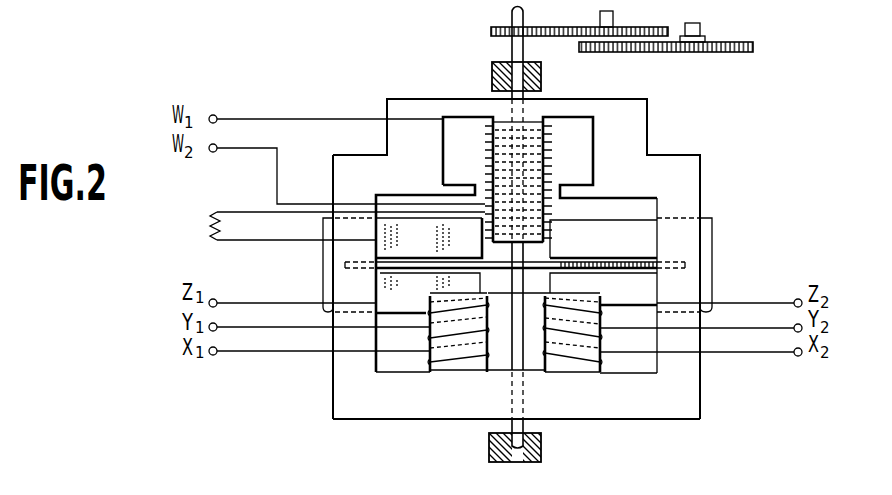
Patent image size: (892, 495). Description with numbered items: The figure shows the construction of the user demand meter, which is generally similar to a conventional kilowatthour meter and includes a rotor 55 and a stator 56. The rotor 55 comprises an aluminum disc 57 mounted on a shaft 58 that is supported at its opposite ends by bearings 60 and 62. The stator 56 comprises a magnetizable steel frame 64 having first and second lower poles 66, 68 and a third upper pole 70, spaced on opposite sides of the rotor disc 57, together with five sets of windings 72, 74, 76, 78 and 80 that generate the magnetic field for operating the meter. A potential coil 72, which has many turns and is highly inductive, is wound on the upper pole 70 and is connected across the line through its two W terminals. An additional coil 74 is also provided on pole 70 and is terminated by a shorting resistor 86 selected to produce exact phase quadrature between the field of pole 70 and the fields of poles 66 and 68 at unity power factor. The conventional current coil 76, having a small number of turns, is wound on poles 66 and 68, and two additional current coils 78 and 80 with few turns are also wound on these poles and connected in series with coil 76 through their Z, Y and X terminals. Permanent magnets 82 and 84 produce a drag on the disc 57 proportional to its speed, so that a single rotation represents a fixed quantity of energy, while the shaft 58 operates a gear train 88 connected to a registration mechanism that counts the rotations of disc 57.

The rotor 55 is at (535, 256).
The stator 56 is at (331, 378).
The aluminum disc 57 is at (490, 272).
The shaft 58 is at (511, 52).
The bearing 60 is at (488, 447).
The bearing 62 is at (491, 73).
The magnetizable steel frame 64 is at (332, 420).
The first lower pole 66 is at (426, 342).
The second lower pole 68 is at (611, 335).
The third upper pole 70 is at (548, 212).
The potential coil 72 is at (546, 148).
The additional coil 74 is at (490, 229).
The current coil 76 is at (305, 302).
The additional current coil 78 is at (292, 327).
The additional current coil 80 is at (278, 351).
The permanent magnet 82 is at (320, 265).
The permanent magnet 84 is at (700, 265).
The shorting resistor 86 is at (208, 228).
The gear train 88 is at (655, 53).